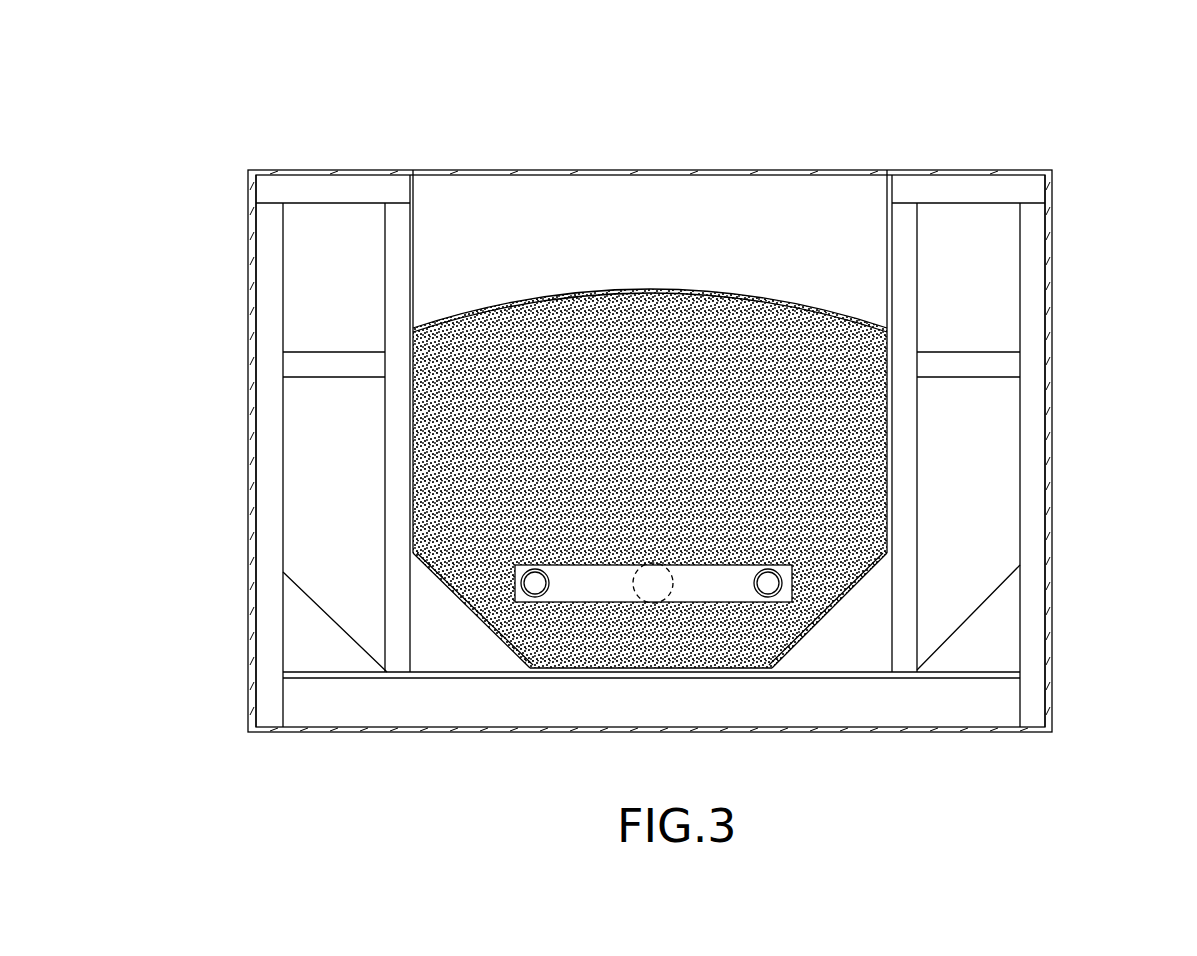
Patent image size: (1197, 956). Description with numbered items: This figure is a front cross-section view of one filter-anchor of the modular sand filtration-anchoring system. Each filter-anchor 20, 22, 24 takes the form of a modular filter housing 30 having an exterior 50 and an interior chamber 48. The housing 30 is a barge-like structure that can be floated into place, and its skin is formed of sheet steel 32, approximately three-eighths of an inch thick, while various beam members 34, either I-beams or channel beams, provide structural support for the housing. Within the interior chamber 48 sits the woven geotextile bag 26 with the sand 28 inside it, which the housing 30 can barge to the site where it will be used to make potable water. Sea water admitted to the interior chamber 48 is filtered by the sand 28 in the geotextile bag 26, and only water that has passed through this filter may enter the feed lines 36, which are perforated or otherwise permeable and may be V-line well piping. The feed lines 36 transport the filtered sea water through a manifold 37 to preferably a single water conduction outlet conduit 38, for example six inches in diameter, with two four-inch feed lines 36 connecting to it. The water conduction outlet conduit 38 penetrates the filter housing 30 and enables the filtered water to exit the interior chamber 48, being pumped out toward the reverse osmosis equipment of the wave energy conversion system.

The filter-anchor 20 is at (673, 403).
The filter-anchor 22 is at (673, 403).
The filter-anchor 24 is at (673, 403).
The woven geotextile bag 26 is at (688, 292).
The sand 28 is at (462, 365).
The modular filter housing 30 is at (1050, 408).
The sheet steel 32 is at (860, 192).
The beam members 34 is at (303, 698).
The feed lines 36 is at (535, 597).
The manifold 37 is at (570, 580).
The water conduction outlet conduit 38 is at (660, 585).
The interior chamber 48 is at (803, 637).
The exterior 50 is at (250, 335).